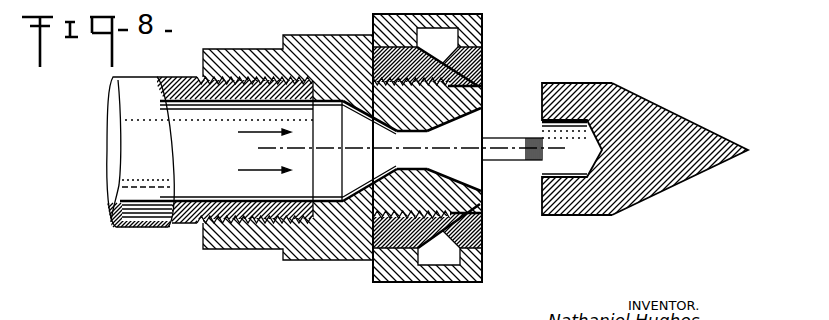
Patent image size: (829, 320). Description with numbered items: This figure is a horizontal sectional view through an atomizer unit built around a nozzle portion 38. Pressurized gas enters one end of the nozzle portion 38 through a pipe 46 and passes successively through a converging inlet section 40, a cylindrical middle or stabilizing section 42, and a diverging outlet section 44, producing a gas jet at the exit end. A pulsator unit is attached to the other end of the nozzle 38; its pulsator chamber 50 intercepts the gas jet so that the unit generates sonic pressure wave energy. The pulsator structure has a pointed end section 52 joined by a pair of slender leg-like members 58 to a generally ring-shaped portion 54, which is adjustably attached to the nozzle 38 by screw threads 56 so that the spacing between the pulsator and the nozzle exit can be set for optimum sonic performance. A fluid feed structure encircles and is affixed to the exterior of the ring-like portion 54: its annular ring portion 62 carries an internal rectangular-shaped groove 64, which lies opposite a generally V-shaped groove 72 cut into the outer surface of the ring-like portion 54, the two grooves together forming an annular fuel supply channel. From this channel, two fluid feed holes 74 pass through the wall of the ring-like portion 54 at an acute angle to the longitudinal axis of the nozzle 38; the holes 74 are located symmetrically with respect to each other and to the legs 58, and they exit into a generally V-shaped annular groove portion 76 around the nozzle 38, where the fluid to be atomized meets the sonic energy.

The nozzle portion 38 is at (345, 263).
The converging inlet section 40 is at (376, 145).
The cylindrical middle or stabilizing section 42 is at (420, 166).
The diverging outlet section 44 is at (465, 145).
The pipe 46 is at (145, 77).
The pulsator chamber 50 is at (568, 127).
The pointed end section 52 is at (673, 117).
The ring-shaped portion 54 is at (483, 54).
The screw threads 56 is at (372, 34).
The leg-like members 58 is at (510, 138).
The annular ring portion 62 is at (483, 15).
The rectangular-shaped groove 64 is at (423, 265).
The V-shaped groove 72 is at (453, 247).
The fluid feed holes 74 is at (475, 60).
The V-shaped annular groove portion 76 is at (476, 97).